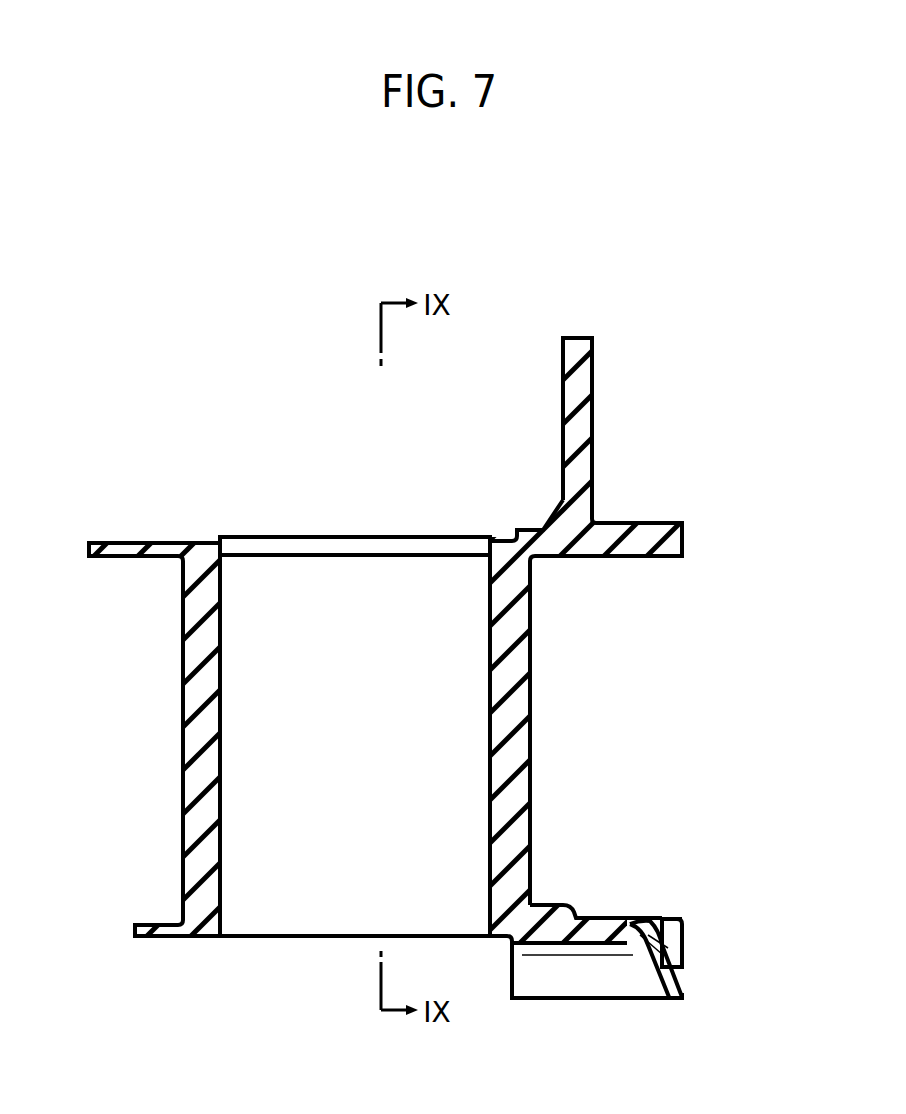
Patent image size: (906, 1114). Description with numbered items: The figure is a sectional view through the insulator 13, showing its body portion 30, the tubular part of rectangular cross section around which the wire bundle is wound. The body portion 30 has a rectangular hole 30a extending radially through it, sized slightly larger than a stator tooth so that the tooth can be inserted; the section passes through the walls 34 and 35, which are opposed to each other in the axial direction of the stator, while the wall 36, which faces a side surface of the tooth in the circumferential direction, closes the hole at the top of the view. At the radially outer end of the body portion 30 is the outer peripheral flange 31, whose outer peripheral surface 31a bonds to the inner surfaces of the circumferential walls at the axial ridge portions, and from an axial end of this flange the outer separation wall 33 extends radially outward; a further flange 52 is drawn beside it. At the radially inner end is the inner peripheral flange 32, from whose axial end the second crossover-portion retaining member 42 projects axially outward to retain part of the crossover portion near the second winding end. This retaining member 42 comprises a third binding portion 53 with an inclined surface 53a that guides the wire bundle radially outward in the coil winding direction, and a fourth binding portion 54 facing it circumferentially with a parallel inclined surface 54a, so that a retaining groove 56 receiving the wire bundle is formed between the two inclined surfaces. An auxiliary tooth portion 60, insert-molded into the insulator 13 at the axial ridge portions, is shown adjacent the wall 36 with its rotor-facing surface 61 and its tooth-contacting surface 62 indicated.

The insulator 13 is at (569, 257).
The body portion 30 is at (538, 667).
The rectangular hole 30a is at (220, 685).
The outer peripheral flange 31 is at (147, 553).
The outer peripheral surface 31a is at (200, 543).
The inner peripheral flange 32 is at (157, 933).
The outer separation wall 33 is at (577, 403).
The wall 34 is at (508, 728).
The wall 35 is at (203, 728).
The wall 36 is at (347, 582).
The second crossover-portion retaining member 42 is at (697, 914).
The outer flange 52 is at (657, 543).
The third binding portion 53 is at (633, 940).
The inclined surface 53a is at (683, 957).
The fourth binding portion 54 is at (683, 935).
The inclined surface 54a is at (670, 921).
The retaining groove 56 is at (685, 945).
The auxiliary tooth portion 60 is at (250, 528).
The rotor-facing surface 61 is at (462, 535).
The tooth-contacting surface 62 is at (290, 548).